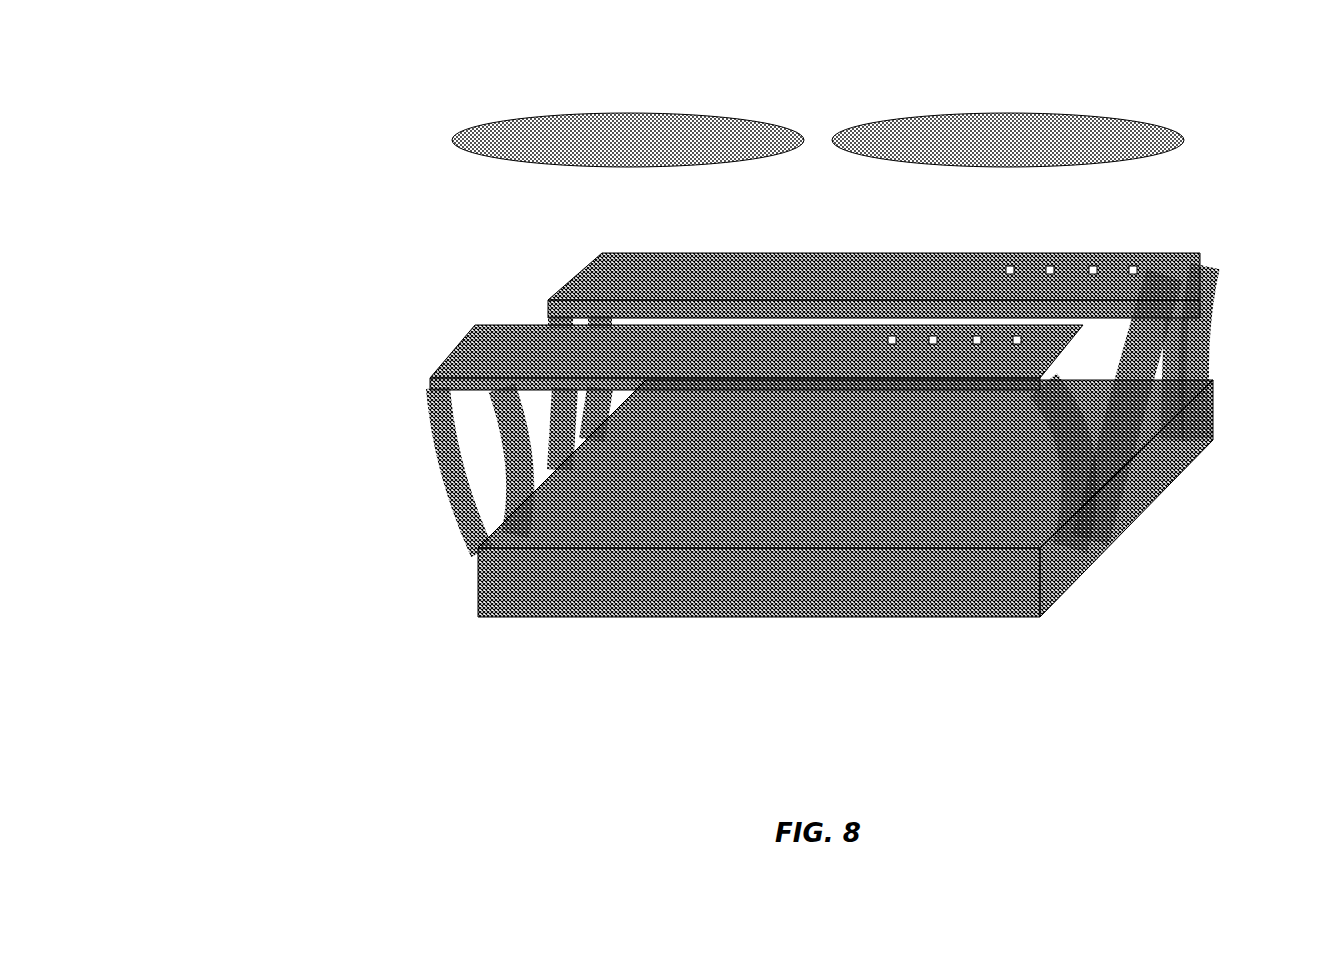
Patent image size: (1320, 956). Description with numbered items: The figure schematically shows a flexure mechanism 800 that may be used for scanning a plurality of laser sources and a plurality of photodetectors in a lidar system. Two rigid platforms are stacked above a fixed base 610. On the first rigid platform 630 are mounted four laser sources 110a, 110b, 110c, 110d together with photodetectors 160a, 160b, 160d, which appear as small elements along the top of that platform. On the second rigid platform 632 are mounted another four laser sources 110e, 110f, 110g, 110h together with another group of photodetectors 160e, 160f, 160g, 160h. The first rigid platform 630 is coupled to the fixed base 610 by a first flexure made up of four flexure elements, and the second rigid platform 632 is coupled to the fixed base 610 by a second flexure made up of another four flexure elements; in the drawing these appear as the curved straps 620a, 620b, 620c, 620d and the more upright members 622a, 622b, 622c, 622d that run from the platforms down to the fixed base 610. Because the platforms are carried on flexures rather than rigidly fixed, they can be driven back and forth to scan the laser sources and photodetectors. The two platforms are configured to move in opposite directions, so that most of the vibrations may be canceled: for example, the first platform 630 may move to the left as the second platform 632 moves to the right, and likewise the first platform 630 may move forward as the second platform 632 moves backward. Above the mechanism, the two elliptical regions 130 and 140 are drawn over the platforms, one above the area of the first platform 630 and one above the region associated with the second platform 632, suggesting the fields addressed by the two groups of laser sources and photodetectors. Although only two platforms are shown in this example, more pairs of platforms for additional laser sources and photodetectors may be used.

The flexure mechanism 800 is at (268, 553).
The first field of view / illumination region 130 is at (527, 135).
The second field of view / illumination region 140 is at (1147, 132).
The laser source 110a is at (645, 272).
The laser source 110b is at (688, 272).
The laser source 110c is at (735, 272).
The laser source 110d is at (770, 268).
The laser source 110e is at (527, 347).
The laser source 110f is at (568, 340).
The laser source 110g is at (605, 345).
The laser source 110h is at (650, 340).
The photodetector 160a is at (1010, 266).
The photodetector 160b is at (1050, 266).
The photodetector 160d is at (1093, 268).
The photodetector 160e is at (893, 345).
The photodetector 160f is at (935, 350).
The photodetector 160g is at (975, 350).
The photodetector 160h is at (1020, 345).
The fixed base 610 is at (878, 598).
The flexible connector 620a is at (473, 510).
The flexible connector 620b is at (503, 433).
The flexible connector 620c is at (1055, 490).
The flexible connector 620d is at (1113, 503).
The support post 622a is at (560, 452).
The support post 622b is at (590, 417).
The support post 622c is at (1163, 423).
The support post 622d is at (1197, 300).
The first rigid platform 630 is at (895, 272).
The second rigid platform 632 is at (483, 350).